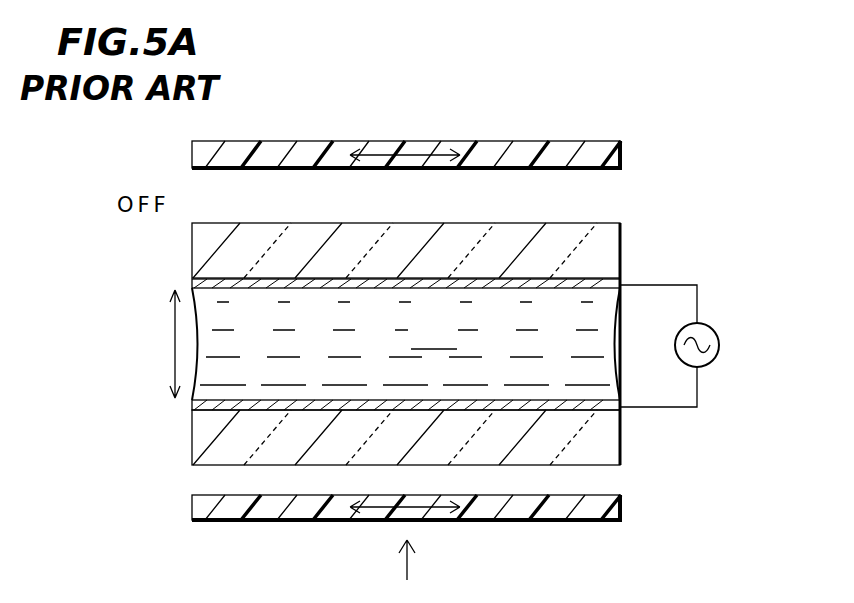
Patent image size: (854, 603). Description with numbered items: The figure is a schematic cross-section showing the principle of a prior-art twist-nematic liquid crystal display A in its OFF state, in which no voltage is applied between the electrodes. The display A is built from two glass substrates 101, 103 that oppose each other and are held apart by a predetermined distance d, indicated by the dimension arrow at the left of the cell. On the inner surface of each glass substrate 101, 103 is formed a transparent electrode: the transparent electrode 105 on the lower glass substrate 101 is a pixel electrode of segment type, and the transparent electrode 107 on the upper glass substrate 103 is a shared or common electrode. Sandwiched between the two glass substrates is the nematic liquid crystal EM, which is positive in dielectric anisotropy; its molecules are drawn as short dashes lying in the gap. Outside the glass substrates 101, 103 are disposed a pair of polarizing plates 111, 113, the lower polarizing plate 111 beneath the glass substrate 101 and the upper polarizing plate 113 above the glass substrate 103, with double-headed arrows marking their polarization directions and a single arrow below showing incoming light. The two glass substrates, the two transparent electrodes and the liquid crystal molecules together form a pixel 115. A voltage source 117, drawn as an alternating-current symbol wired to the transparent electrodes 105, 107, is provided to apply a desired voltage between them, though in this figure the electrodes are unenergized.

The twist-nematic liquid crystal display A is at (773, 151).
The glass substrate 101 is at (605, 436).
The glass substrate 103 is at (607, 247).
The transparent electrode 105 is at (192, 405).
The transparent electrode 107 is at (192, 283).
The polarizing plate 111 is at (622, 506).
The polarizing plate 113 is at (622, 151).
The pixel 115 is at (746, 277).
The voltage source 117 is at (720, 345).